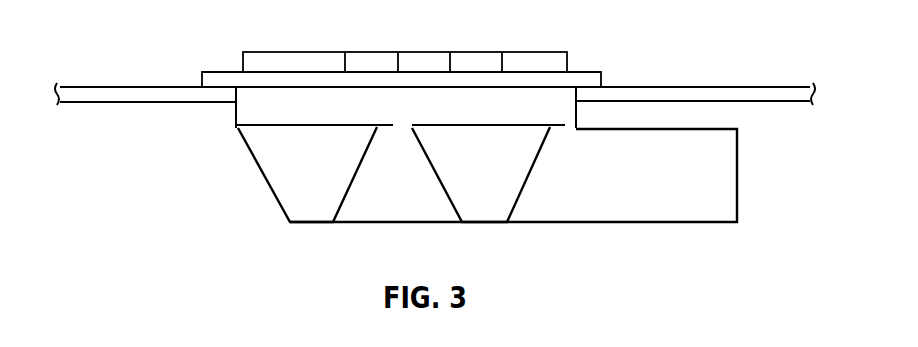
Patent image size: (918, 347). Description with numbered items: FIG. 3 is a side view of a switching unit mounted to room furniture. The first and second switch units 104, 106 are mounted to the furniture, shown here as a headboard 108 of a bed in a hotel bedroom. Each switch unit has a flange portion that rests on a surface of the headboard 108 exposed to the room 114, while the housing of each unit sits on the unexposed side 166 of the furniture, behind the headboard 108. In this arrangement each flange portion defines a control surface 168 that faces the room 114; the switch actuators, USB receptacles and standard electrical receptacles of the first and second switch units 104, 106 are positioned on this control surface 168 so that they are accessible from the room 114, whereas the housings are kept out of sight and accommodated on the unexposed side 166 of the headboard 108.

The first switch unit 104 is at (575, 42).
The second switch unit 106 is at (538, 37).
The headboard 108 is at (747, 85).
The room 114 is at (142, 63).
The unexposed side 166 is at (145, 149).
The control surface 168 is at (243, 72).